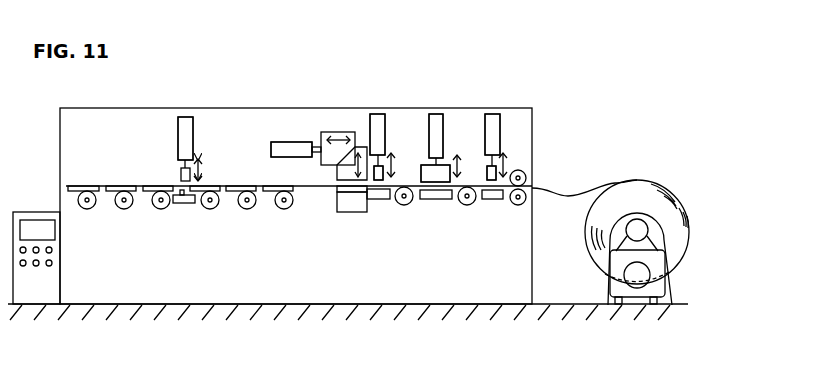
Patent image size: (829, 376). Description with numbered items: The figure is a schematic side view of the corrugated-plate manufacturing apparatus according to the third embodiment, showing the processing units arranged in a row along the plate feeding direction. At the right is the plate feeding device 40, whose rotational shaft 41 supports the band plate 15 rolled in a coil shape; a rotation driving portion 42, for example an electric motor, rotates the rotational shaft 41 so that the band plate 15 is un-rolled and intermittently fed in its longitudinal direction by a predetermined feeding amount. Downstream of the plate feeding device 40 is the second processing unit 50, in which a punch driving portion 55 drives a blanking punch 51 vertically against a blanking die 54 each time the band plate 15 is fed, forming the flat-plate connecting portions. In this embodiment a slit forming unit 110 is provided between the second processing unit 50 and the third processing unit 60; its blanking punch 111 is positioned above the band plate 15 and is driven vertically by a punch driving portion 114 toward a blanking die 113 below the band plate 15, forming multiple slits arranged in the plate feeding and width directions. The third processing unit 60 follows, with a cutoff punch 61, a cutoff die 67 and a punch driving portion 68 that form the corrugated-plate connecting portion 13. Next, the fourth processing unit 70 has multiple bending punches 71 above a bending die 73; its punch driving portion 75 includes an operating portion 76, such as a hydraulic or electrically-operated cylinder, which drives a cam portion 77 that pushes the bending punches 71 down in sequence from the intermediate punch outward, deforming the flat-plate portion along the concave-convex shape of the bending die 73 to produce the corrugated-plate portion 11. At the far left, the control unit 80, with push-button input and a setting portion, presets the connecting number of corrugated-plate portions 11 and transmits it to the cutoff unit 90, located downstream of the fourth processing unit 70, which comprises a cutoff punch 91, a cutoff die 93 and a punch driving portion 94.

The corrugated-plate portion 11 is at (84, 184).
The corrugated-plate connecting portion 13 is at (101, 192).
The band plate 15 is at (566, 198).
The plate feeding device 40 is at (675, 290).
The rotational shaft 41 is at (637, 224).
The rotation driving portion 42 is at (630, 297).
The second processing unit 50 is at (491, 112).
The blanking punch 51 is at (490, 181).
The blanking die 54 is at (500, 200).
The punch driving portion 55 is at (501, 126).
The third processing unit 60 is at (377, 112).
The cutoff punch 61 is at (377, 181).
The cutoff die 67 is at (386, 200).
The punch driving portion 68 is at (386, 126).
The fourth processing unit 70 is at (328, 128).
The bending punches 71 is at (347, 192).
The bending die 73 is at (355, 212).
The punch driving portion 75 is at (278, 141).
The operating portion 76 is at (303, 142).
The cam portion 77 is at (343, 131).
The control unit 80 is at (32, 211).
The cutoff unit 90 is at (186, 115).
The cutoff punch 91 is at (181, 196).
The cutoff die 93 is at (192, 203).
The punch driving portion 94 is at (193, 131).
The slit forming unit 110 is at (437, 112).
The blanking punch 111 is at (432, 183).
The blanking die 113 is at (443, 200).
The punch driving portion 114 is at (444, 126).